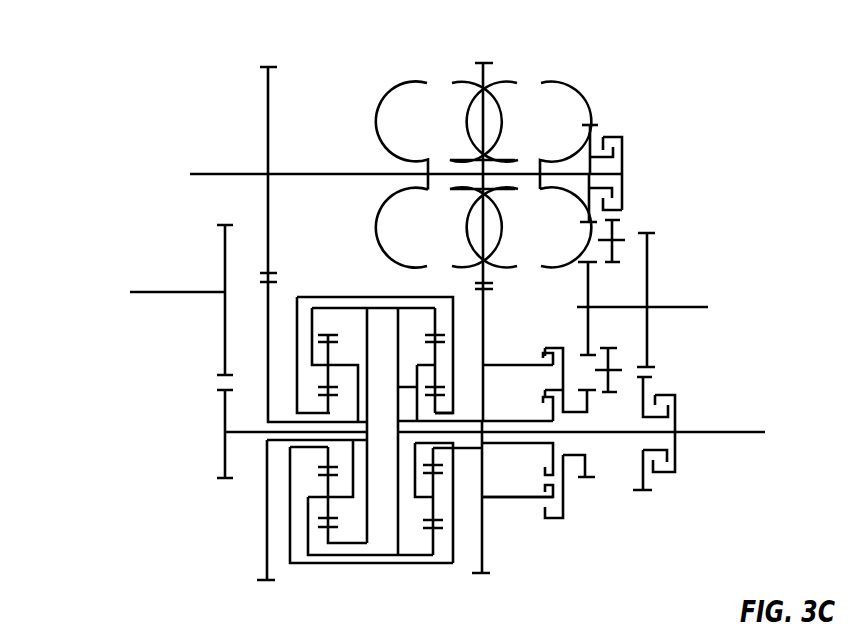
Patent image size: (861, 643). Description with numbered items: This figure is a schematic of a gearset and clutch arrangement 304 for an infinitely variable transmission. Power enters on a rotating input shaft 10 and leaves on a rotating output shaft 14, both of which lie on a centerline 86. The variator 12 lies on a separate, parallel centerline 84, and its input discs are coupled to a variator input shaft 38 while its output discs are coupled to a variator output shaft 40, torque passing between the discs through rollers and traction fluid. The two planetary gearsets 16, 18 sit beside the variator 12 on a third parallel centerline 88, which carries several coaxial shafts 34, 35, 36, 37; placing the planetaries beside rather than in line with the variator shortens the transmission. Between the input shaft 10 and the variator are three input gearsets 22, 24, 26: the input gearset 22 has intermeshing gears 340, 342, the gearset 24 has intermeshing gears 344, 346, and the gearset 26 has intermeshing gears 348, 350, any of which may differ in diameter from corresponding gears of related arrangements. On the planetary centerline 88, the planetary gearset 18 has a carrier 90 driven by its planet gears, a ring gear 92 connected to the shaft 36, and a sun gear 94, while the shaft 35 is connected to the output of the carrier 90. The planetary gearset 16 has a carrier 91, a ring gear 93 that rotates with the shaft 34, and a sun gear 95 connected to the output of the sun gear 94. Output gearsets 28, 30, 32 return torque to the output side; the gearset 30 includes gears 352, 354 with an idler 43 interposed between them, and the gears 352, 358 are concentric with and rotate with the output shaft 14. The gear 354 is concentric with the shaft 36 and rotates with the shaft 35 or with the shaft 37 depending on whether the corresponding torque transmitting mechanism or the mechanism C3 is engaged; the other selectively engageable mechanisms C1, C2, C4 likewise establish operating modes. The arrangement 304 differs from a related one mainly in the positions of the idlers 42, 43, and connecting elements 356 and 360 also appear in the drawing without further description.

The gearset and clutch arrangement 304 is at (98, 90).
The centerline 84 is at (182, 172).
The variator 12 is at (533, 67).
The variator output shaft 40 is at (504, 187).
The variator input shaft 38 is at (330, 172).
The gear 344 is at (268, 223).
The gear 348 is at (485, 267).
The gear 350 is at (484, 318).
The output gearset 32 is at (590, 121).
The interconnecting member 356 is at (588, 141).
The torque transmitting mechanism C4 is at (603, 163).
The idler 42 is at (622, 232).
The gear 352 is at (588, 296).
The gear 358 is at (647, 275).
The output shaft 14 is at (708, 306).
The idler 43 is at (602, 347).
The gear 354 is at (588, 400).
The torque transmitting mechanism C3 is at (538, 344).
The torque transmitting mechanism C1 is at (539, 404).
The shaft 37 is at (522, 363).
The shaft 35 is at (492, 420).
The interconnecting member 360 is at (648, 385).
The torque transmitting mechanism C2 is at (678, 441).
The output gearset 28 is at (637, 495).
The shaft 36 is at (598, 436).
The output gearset 30 is at (580, 493).
The input shaft 10 is at (200, 291).
The centerline 86 is at (130, 298).
The gear 340 is at (227, 318).
The gear 342 is at (224, 413).
The shaft 34 is at (250, 430).
The centerline 88 is at (203, 432).
The input gearset 22 is at (223, 492).
The gear 346 is at (265, 483).
The input gearset 24 is at (260, 583).
The sun gear 95 is at (333, 408).
The carrier 91 is at (349, 362).
The ring gear 93 is at (368, 345).
The ring gear 92 is at (435, 330).
The carrier 90 is at (397, 387).
The sun gear 94 is at (437, 410).
The planetary gearset 16 is at (332, 567).
The planetary gearset 18 is at (413, 567).
The input gearset 26 is at (482, 585).